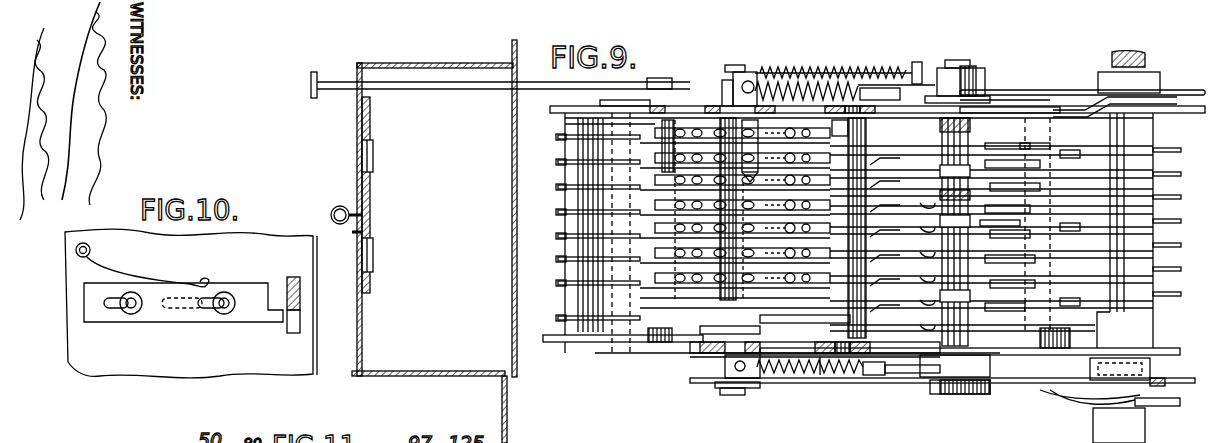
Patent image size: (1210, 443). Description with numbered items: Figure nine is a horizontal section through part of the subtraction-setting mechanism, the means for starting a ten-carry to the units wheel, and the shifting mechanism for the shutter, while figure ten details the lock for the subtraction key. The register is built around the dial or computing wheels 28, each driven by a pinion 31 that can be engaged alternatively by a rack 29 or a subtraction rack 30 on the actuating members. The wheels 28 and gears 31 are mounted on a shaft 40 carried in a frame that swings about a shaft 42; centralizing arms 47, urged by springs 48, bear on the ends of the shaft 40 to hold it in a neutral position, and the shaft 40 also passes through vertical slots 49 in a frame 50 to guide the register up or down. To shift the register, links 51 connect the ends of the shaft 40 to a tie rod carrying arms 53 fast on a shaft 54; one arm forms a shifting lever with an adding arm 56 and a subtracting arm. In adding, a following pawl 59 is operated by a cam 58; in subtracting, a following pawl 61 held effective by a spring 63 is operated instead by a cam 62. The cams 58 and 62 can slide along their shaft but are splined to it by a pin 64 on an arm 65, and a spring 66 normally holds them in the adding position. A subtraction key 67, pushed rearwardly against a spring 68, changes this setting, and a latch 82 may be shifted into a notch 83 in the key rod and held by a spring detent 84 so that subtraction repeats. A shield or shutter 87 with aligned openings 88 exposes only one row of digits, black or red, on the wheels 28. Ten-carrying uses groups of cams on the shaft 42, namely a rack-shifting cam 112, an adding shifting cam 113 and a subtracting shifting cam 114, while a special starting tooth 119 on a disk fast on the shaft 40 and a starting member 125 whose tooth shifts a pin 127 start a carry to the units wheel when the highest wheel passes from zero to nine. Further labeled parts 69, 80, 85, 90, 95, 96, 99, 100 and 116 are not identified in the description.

In FIG. 9, the dial or computing wheels 28 is at (663, 257).
In FIG. 9, the rack 29 is at (1025, 268).
In FIG. 9, the subtraction rack 30 is at (670, 118).
In FIG. 9, the pinions 31 is at (812, 345).
In FIG. 9, the shaft 40 is at (735, 388).
In FIG. 9, the shaft 42 is at (978, 92).
In FIG. 9, the centralizing arms 47 is at (772, 82).
In FIG. 9, the springs 48 is at (802, 374).
In FIG. 9, the vertical slots 49 is at (826, 74).
In FIG. 9, the frame 50 is at (1018, 108).
In FIG. 9, the links 51 is at (762, 70).
In FIG. 9, the arms 53 is at (942, 85).
In FIG. 9, the shaft 54 is at (906, 325).
In FIG. 9, the adding arm 56 is at (1035, 384).
In FIG. 9, the cam 58 is at (1085, 400).
In FIG. 9, the following pawl 59 is at (1050, 385).
In FIG. 9, the following pawl 61 is at (1112, 372).
In FIG. 9, the cam 62 is at (1052, 355).
In FIG. 9, the spring 63 is at (1138, 332).
In FIG. 9, the pin 64 is at (1160, 410).
In FIG. 9, the arm 65 is at (1160, 385).
In FIG. 9, the spring 66 is at (1119, 425).
In FIG. 10, the subtraction key 67 is at (290, 286).
In FIG. 9, the spring 68 is at (893, 80).
In FIG. 9, the bent bar 69 is at (1126, 100).
In FIG. 9, the block 80 is at (843, 130).
In FIG. 10, the latch 82 is at (157, 313).
In FIG. 10, the notch 83 is at (290, 328).
In FIG. 10, the spring detent 84 is at (196, 283).
In FIG. 9, the pin 85 is at (792, 130).
In FIG. 9, the shield or shutter 87 is at (742, 84).
In FIG. 9, the openings 88 is at (706, 106).
In FIG. 9, the bar 90 is at (955, 232).
In FIG. 9, the block 95 is at (955, 335).
In FIG. 9, the part 96 is at (952, 439).
In FIG. 9, the part 99 is at (917, 438).
In FIG. 9, the part 100 is at (874, 435).
In FIG. 9, the rack-shifting cam 112 is at (992, 158).
In FIG. 9, the adding shifting cam 113 is at (1028, 156).
In FIG. 9, the subtracting shifting cam 114 is at (1012, 232).
In FIG. 9, the bars 116 is at (878, 182).
In FIG. 9, the special starting tooth 119 is at (820, 376).
In FIG. 9, the starting member 125 is at (720, 336).
In FIG. 9, the pin 127 is at (792, 330).